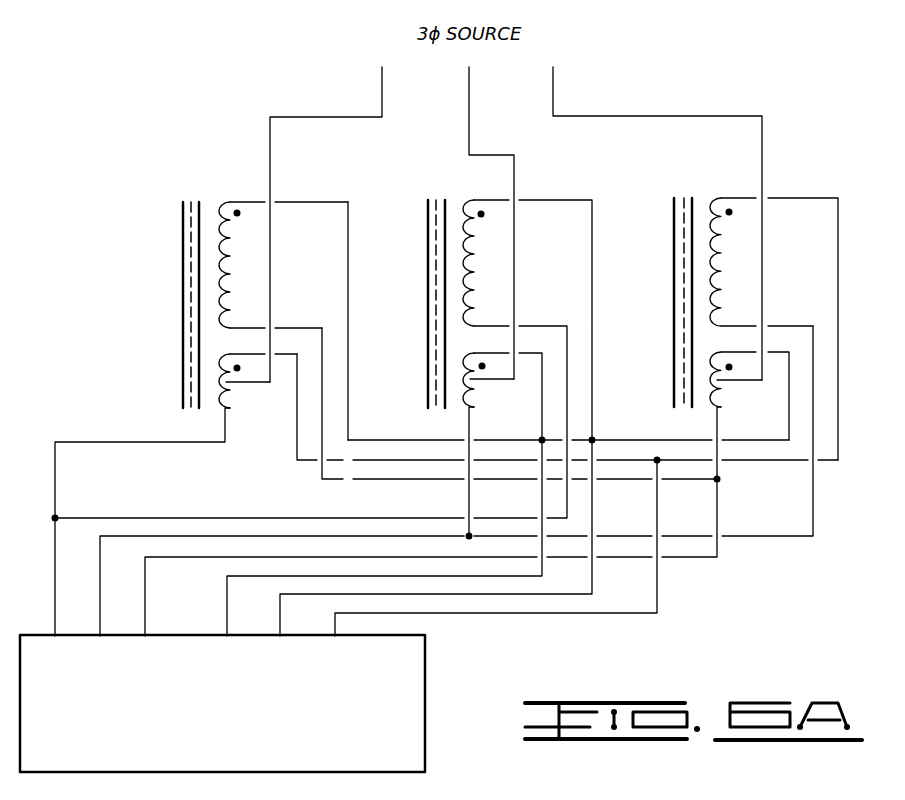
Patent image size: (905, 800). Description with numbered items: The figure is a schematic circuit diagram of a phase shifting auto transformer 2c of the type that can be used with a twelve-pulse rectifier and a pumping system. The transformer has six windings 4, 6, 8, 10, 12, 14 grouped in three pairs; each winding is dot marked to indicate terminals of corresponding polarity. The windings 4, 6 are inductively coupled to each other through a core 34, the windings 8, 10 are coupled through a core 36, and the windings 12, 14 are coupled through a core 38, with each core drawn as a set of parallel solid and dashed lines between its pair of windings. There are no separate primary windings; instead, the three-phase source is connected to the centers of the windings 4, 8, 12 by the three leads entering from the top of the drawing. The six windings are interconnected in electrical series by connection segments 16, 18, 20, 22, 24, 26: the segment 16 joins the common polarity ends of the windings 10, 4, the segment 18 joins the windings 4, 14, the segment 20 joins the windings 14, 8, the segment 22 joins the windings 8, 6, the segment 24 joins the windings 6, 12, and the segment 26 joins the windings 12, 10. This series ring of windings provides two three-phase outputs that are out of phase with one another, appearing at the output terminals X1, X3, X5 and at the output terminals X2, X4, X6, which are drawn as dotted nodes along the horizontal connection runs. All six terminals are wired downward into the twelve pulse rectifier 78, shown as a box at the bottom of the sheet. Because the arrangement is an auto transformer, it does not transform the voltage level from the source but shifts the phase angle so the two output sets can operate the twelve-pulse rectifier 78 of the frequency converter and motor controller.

The transformer 2c is at (575, 93).
The winding 4 is at (228, 261).
The winding 6 is at (228, 395).
The winding 8 is at (471, 257).
The winding 10 is at (470, 395).
The winding 12 is at (717, 258).
The winding 14 is at (718, 398).
The connection segment 16 is at (350, 372).
The connection segment 18 is at (342, 481).
The connection segment 20 is at (762, 444).
The connection segment 22 is at (530, 325).
The connection segment 24 is at (297, 446).
The connection segment 26 is at (787, 540).
The core 34 is at (182, 228).
The core 36 is at (425, 232).
The core 38 is at (672, 240).
The twelve-pulse rectifier 78 is at (425, 668).
The output terminal X1 is at (552, 441).
The output terminal X2 is at (728, 483).
The output terminal X3 is at (602, 449).
The output terminal X4 is at (43, 525).
The output terminal X5 is at (667, 469).
The output terminal X6 is at (456, 529).